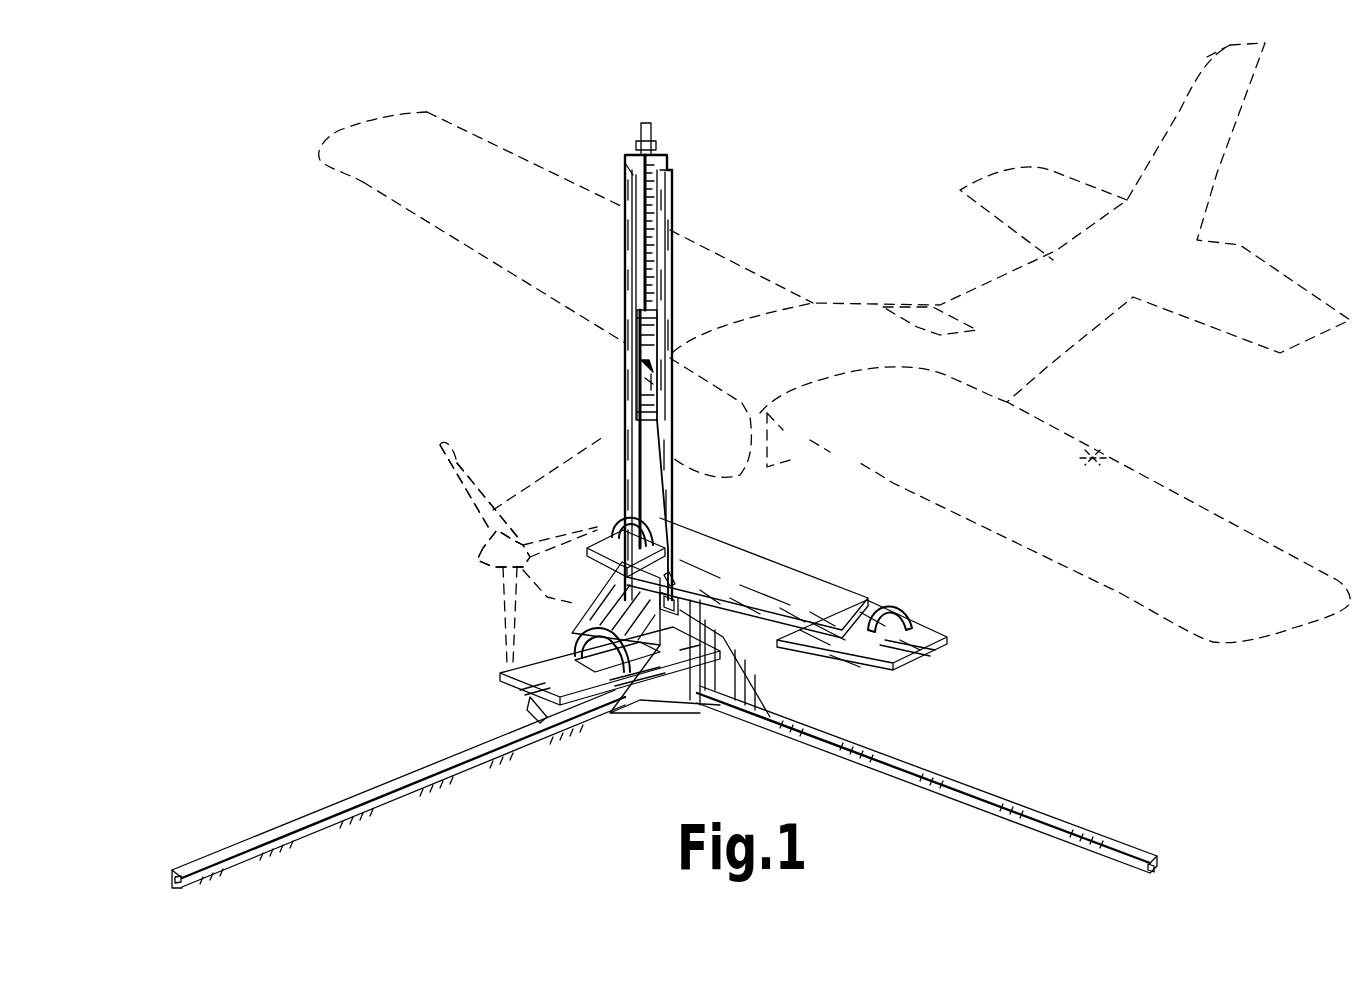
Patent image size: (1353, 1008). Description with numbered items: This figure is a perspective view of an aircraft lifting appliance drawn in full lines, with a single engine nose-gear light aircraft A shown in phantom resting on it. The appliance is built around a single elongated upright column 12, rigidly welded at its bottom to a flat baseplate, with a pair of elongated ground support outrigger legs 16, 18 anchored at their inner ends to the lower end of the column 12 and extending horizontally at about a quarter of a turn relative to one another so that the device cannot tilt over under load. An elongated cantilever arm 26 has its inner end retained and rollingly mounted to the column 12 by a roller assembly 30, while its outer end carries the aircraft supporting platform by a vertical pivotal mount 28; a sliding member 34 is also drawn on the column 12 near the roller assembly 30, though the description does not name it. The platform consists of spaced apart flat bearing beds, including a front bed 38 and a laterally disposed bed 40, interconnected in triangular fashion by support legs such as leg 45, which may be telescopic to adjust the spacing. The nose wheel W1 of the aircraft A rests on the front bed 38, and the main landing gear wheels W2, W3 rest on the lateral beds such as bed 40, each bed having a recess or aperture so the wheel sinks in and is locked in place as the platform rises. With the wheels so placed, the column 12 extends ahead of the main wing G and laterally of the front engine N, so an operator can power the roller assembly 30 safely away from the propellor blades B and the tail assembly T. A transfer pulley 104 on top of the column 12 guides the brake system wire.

The upright column 12 is at (653, 198).
The transfer pulley 104 is at (653, 131).
The slide carriage 34 is at (637, 304).
The roller assembly 30 is at (638, 372).
The cantilever arm 26 is at (673, 533).
The vertical pivotal mount 28 is at (688, 560).
The bearing bed 40 is at (947, 634).
The front bed 38 is at (528, 712).
The support leg 45 is at (643, 687).
The ground support outrigger leg 16 is at (303, 813).
The ground support outrigger leg 18 is at (958, 789).
The aircraft A is at (838, 300).
The tail assembly T is at (1215, 172).
The main wing G is at (1095, 455).
The propellor blades B is at (445, 488).
The front engine N is at (480, 551).
The nose wheel W1 is at (596, 718).
The main landing gear wheel W2 is at (890, 592).
The main landing gear wheel W3 is at (616, 515).